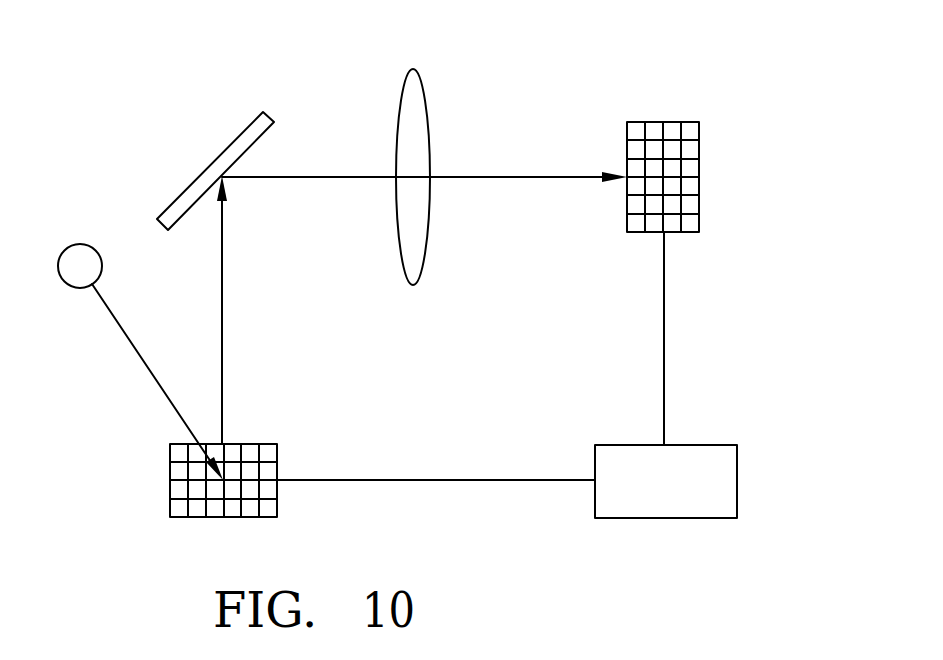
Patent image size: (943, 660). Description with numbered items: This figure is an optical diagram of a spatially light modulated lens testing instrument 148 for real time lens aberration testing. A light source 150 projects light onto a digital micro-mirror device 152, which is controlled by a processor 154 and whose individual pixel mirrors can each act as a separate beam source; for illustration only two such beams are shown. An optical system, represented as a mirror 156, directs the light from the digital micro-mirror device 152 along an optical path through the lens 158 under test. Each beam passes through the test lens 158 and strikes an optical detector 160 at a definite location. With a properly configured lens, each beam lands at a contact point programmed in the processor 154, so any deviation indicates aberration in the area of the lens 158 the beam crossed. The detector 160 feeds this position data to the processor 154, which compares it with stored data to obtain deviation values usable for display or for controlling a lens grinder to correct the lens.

The lens testing instrument 148 is at (735, 315).
The light source 150 is at (80, 243).
The digital micro-mirror device 152 is at (170, 480).
The processor 154 is at (738, 487).
The mirror 156 is at (230, 143).
The lens 158 is at (428, 117).
The optical detector 160 is at (700, 153).